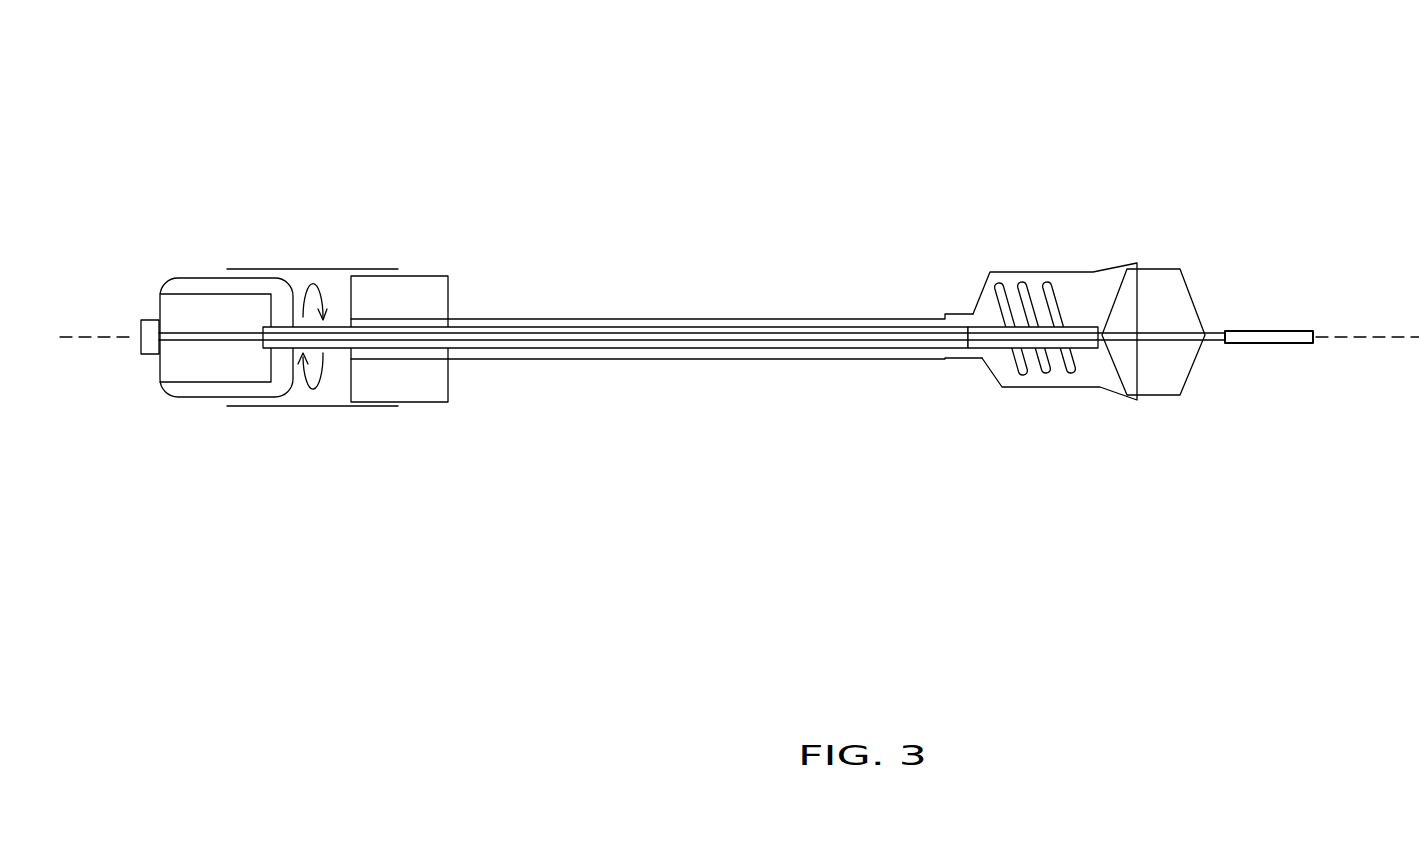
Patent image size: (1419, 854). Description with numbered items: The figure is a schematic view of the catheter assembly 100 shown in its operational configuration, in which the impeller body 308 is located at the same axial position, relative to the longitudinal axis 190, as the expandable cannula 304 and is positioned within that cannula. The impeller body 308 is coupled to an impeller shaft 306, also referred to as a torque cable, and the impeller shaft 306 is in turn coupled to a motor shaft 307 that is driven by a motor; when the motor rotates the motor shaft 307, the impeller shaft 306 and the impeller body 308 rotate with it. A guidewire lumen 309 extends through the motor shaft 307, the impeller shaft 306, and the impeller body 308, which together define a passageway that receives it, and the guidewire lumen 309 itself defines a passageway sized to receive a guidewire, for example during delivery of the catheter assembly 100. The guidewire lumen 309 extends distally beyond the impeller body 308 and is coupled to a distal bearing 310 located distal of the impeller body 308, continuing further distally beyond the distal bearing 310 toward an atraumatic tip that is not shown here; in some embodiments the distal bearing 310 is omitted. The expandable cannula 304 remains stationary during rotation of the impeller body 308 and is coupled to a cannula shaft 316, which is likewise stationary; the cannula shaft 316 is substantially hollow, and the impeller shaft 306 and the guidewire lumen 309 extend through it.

The catheter assembly 100 is at (833, 128).
The longitudinal axis 190 is at (1362, 334).
The expandable cannula 304 is at (1000, 271).
The impeller shaft 306 is at (750, 348).
The motor shaft 307 is at (240, 382).
The impeller body 308 is at (1052, 308).
The guidewire lumen 309 is at (632, 332).
The distal bearing 310 is at (1160, 397).
The cannula shaft 316 is at (555, 318).